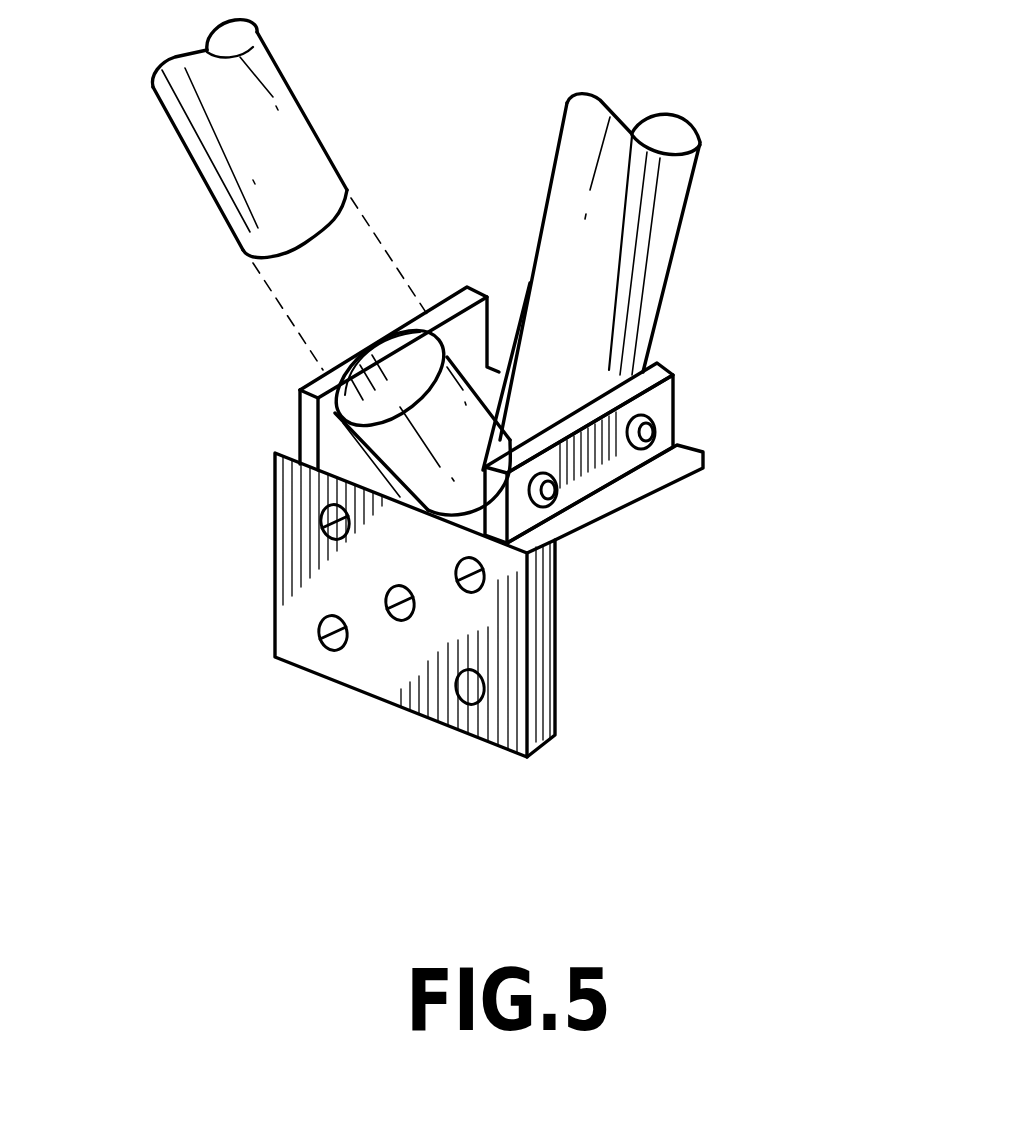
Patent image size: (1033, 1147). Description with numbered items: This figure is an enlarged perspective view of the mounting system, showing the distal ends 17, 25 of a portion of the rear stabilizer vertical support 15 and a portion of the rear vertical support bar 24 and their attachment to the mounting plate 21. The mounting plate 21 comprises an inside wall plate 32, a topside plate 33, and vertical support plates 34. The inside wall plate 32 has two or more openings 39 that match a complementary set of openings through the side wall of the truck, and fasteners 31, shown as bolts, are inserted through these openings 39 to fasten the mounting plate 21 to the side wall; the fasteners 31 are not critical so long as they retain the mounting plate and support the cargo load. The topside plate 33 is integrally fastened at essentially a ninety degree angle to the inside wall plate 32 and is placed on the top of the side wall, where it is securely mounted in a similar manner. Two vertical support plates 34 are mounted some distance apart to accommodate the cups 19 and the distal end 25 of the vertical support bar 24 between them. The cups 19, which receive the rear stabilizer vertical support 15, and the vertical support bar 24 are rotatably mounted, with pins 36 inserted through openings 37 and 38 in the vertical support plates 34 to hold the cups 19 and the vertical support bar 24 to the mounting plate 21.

The rear stabilizer vertical support 15 is at (283, 97).
The distal end 17 is at (250, 252).
The cup 19 is at (390, 460).
The mounting plate 21 is at (241, 640).
The rear vertical support bar 24 is at (650, 223).
The distal end 25 is at (660, 368).
The fasteners 31 is at (390, 620).
The inside wall plate 32 is at (510, 723).
The topside plate 33 is at (690, 487).
The vertical support plates 34 is at (330, 408).
The pins 36 is at (656, 432).
The opening 37 is at (553, 425).
The opening 38 is at (623, 477).
The openings 39 is at (470, 687).